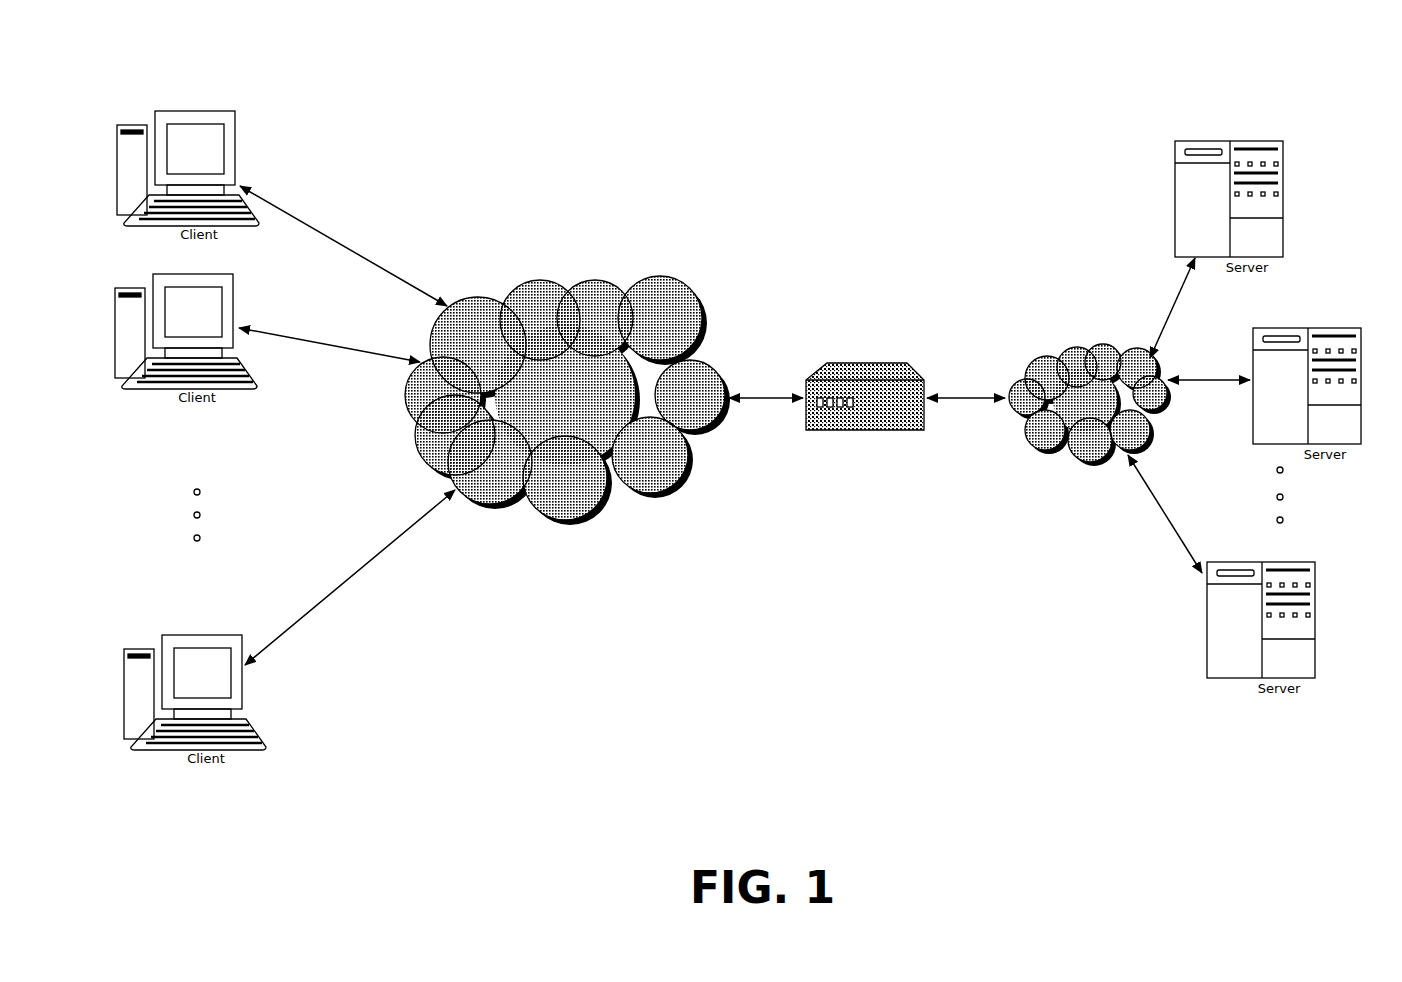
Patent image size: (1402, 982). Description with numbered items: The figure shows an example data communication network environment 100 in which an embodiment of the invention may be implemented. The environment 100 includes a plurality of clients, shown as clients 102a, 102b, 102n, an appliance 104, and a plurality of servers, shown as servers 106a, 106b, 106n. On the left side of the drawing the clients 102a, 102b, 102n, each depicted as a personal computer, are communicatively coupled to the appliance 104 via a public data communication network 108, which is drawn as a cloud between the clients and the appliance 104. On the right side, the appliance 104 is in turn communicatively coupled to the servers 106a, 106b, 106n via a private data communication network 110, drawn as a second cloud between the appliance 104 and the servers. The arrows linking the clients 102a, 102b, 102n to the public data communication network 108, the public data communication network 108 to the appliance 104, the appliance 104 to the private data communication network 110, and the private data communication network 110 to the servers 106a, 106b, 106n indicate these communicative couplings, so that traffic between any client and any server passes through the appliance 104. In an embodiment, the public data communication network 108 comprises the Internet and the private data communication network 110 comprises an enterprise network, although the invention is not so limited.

The data communication network environment 100 is at (1156, 66).
The client 102a is at (237, 121).
The client 102b is at (236, 286).
The client 102n is at (244, 699).
The appliance 104 is at (873, 363).
The server 106a is at (1287, 194).
The server 106b is at (1325, 328).
The server 106n is at (1222, 677).
The public data communication network 108 is at (682, 293).
The private data communication network 110 is at (1077, 347).